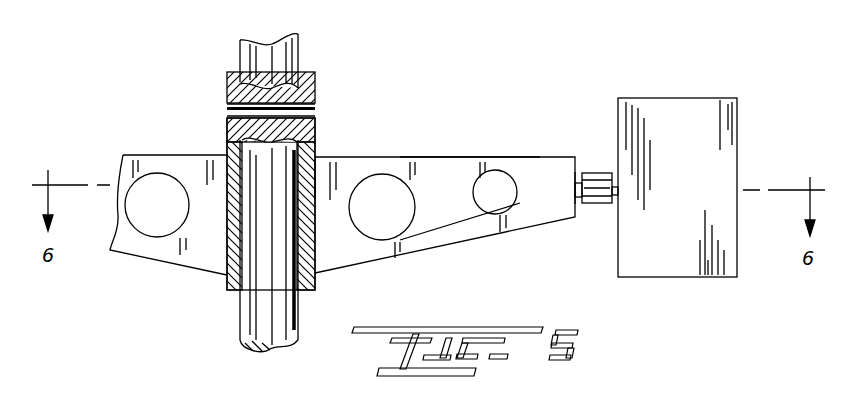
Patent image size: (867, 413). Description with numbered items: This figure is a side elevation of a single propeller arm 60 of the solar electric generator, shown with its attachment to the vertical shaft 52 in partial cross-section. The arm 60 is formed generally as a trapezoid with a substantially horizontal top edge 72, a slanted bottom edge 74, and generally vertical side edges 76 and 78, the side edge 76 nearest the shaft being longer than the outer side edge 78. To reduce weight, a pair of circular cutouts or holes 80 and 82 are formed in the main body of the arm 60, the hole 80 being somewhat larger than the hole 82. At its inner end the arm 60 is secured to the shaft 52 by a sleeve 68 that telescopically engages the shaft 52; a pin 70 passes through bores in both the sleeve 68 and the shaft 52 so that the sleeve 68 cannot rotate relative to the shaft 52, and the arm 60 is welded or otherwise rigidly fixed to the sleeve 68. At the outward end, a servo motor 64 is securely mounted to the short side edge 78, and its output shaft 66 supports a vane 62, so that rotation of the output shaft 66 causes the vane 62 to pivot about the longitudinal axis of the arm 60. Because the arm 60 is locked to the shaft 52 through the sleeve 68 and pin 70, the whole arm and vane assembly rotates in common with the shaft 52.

The shaft 52 is at (300, 60).
The arm 60 is at (428, 168).
The vane 62 is at (677, 103).
The servo motor 64 is at (595, 177).
The output shaft 66 is at (618, 197).
The sleeve 68 is at (316, 138).
The pin 70 is at (317, 100).
The top edge 72 is at (463, 156).
The bottom edge 74 is at (462, 240).
The side edge 76 is at (316, 197).
The side edge 78 is at (575, 177).
The hole 80 is at (392, 239).
The hole 82 is at (500, 177).